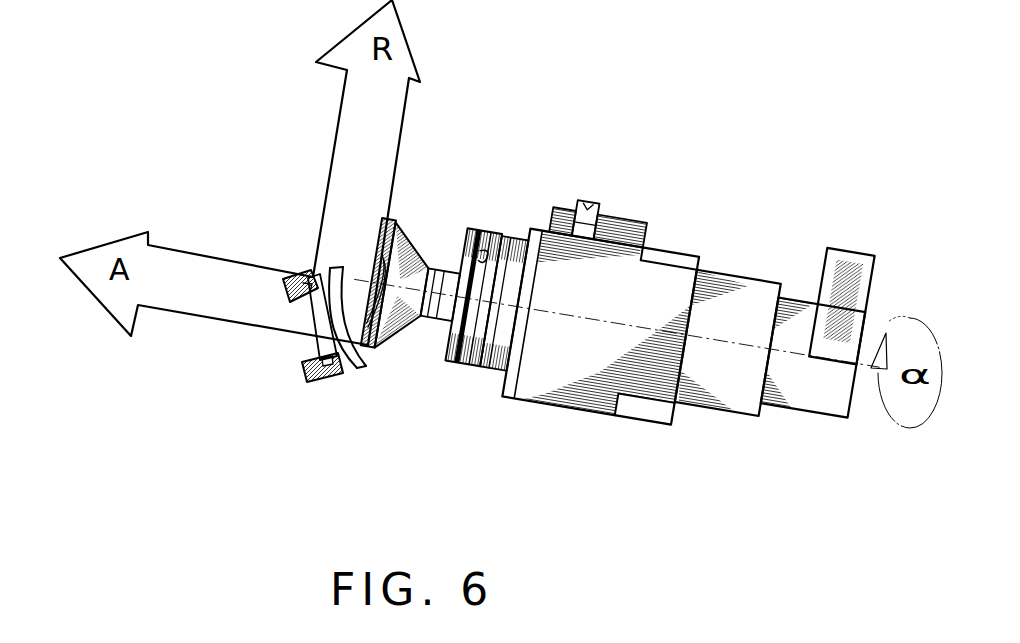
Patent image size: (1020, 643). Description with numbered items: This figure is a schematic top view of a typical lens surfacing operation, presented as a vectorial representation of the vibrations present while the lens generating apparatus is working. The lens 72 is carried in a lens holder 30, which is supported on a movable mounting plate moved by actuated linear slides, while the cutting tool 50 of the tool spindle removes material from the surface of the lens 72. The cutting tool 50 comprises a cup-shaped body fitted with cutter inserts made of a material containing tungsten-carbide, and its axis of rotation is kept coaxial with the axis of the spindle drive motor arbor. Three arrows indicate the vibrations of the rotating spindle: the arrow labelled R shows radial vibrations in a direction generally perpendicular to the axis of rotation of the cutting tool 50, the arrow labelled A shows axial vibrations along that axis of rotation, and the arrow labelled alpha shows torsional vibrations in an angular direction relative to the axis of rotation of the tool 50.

The lens holder 30 is at (303, 362).
The cutting tool 50 is at (411, 232).
The lens 72 is at (360, 366).